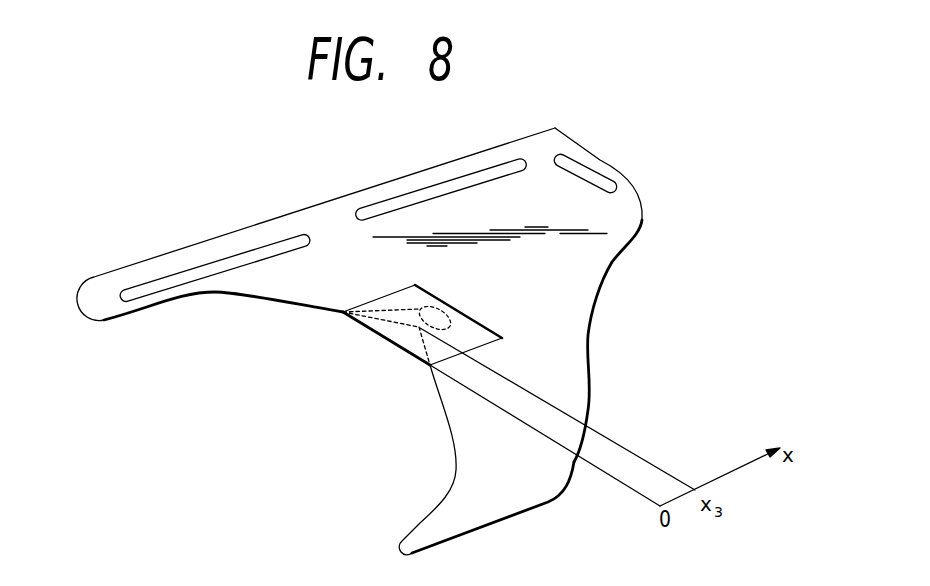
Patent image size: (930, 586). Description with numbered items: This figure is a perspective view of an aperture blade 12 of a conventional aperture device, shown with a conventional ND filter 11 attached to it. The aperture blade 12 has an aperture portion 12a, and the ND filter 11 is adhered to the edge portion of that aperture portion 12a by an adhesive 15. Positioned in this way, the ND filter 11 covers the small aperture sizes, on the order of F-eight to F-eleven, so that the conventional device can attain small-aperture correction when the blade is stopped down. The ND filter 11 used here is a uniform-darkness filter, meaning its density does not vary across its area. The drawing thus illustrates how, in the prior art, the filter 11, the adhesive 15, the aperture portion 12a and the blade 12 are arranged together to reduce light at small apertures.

The ND filter 11 is at (492, 331).
The aperture blade 12 is at (593, 323).
The aperture portion 12a is at (437, 398).
The adhesive 15 is at (437, 306).